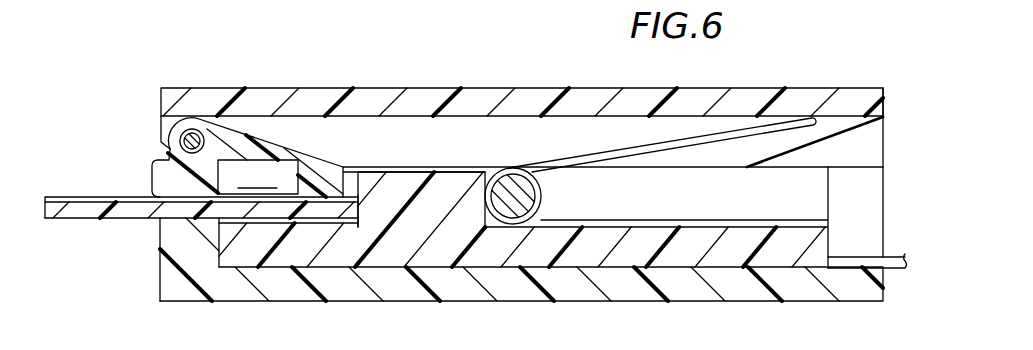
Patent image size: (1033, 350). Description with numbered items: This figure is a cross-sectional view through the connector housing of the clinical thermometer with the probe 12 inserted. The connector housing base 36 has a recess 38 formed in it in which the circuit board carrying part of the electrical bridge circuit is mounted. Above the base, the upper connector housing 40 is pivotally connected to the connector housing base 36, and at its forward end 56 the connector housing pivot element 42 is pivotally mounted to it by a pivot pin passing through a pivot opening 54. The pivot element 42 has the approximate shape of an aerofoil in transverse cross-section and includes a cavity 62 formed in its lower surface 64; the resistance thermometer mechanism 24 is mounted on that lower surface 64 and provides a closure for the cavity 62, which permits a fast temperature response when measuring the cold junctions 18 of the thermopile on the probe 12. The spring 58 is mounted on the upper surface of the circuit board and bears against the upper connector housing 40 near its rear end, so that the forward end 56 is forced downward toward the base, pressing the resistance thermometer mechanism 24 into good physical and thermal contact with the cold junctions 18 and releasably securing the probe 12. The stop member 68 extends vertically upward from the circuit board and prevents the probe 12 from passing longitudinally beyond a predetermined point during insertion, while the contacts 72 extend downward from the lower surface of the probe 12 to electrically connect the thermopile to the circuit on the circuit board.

The probe 12 is at (73, 220).
The cold junctions 18 is at (292, 196).
The resistance thermometer mechanism 24 is at (232, 195).
The connector housing base 36 is at (515, 300).
The recess 38 is at (713, 207).
The upper connector housing 40 is at (470, 98).
The connector housing pivot element 42 is at (153, 173).
The pivot opening 54 is at (183, 136).
The forward end 56 is at (161, 100).
The spring 58 is at (574, 156).
The cavity 62 is at (258, 177).
The lower surface 64 is at (189, 197).
The stop member 68 is at (358, 189).
The contacts 72 is at (317, 224).